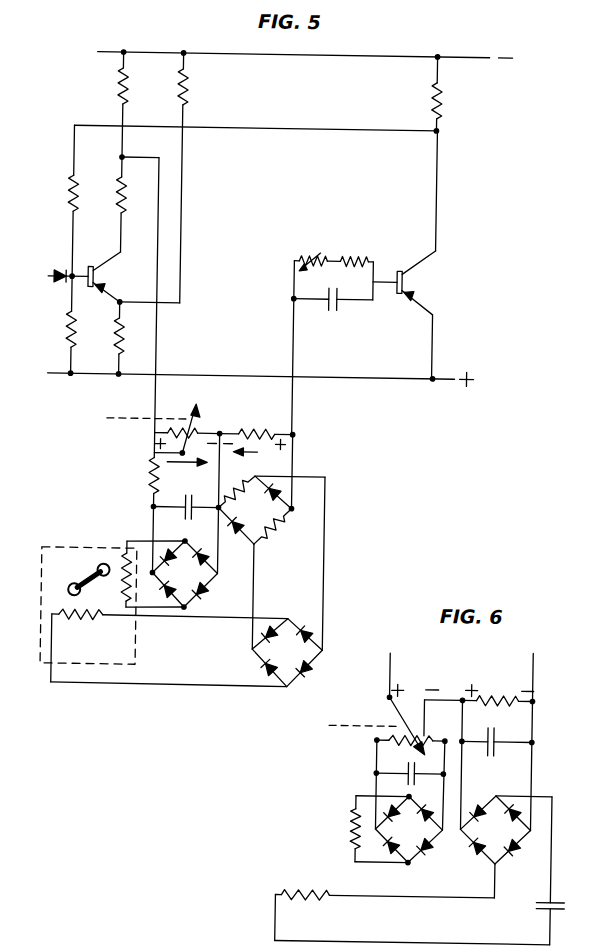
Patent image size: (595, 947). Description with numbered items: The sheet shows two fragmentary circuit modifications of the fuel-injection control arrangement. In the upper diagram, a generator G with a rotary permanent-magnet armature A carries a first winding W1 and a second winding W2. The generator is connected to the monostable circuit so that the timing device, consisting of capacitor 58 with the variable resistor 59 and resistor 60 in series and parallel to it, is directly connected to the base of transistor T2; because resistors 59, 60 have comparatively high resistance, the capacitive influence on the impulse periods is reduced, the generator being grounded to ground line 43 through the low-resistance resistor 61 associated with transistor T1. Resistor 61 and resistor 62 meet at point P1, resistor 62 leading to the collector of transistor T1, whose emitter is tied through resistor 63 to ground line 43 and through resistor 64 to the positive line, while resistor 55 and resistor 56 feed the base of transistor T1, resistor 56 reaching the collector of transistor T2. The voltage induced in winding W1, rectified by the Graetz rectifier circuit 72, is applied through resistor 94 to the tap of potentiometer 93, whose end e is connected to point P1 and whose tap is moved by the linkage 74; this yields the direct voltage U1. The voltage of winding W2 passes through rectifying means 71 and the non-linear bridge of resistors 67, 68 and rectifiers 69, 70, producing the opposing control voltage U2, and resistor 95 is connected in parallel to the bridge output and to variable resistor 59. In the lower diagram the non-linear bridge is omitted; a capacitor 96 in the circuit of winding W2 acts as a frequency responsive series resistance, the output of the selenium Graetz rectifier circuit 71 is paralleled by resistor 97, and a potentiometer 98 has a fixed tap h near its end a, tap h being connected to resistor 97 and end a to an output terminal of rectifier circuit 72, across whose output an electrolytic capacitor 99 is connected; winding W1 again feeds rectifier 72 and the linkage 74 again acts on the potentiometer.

In FIG. 5, the ground line 43 is at (387, 56).
In FIG. 5, the resistor 55 is at (71, 336).
In FIG. 5, the resistor 56 is at (73, 191).
In FIG. 5, the capacitor 58 is at (342, 306).
In FIG. 5, the variable resistor 59 is at (310, 255).
In FIG. 5, the resistor 60 is at (362, 255).
In FIG. 5, the resistor 61 is at (121, 84).
In FIG. 5, the resistor 62 is at (120, 195).
In FIG. 5, the resistor 63 is at (189, 84).
In FIG. 5, the resistor 64 is at (119, 337).
In FIG. 5, the resistor 67 is at (240, 492).
In FIG. 5, the resistor 68 is at (279, 533).
In FIG. 5, the rectifier 69 is at (241, 538).
In FIG. 5, the rectifier 70 is at (284, 486).
In FIG. 6, the rectifying means 71 is at (508, 862).
In FIG. 5, the Graetz rectifier circuit 72 is at (206, 597).
In FIG. 6, the Graetz rectifier circuit 72 is at (429, 862).
In FIG. 5, the linkage 74 is at (119, 419).
In FIG. 6, the linkage 74 is at (358, 716).
In FIG. 5, the potentiometer 93 is at (216, 431).
In FIG. 5, the resistor 94 is at (153, 471).
In FIG. 5, the resistor 95 is at (264, 431).
In FIG. 6, the capacitor 96 is at (562, 894).
In FIG. 6, the resistor 97 is at (508, 694).
In FIG. 6, the potentiometer 98 is at (398, 738).
In FIG. 6, the electrolytic capacitor 99 is at (412, 774).
In FIG. 5, the point P1 is at (123, 291).
In FIG. 5, the transistor T1 is at (100, 288).
In FIG. 5, the transistor T2 is at (414, 254).
In FIG. 5, the generator G is at (70, 546).
In FIG. 5, the rotary armature A is at (98, 572).
In FIG. 5, the first winding W1 is at (124, 564).
In FIG. 6, the first winding W1 is at (358, 846).
In FIG. 5, the second winding W2 is at (77, 625).
In FIG. 6, the second winding W2 is at (306, 890).
In FIG. 5, the direct voltage U1 is at (187, 477).
In FIG. 5, the control voltage U2 is at (256, 466).
In FIG. 6, the fixed tap h is at (425, 735).
In FIG. 6, the end e is at (372, 732).
In FIG. 6, the end a is at (447, 732).